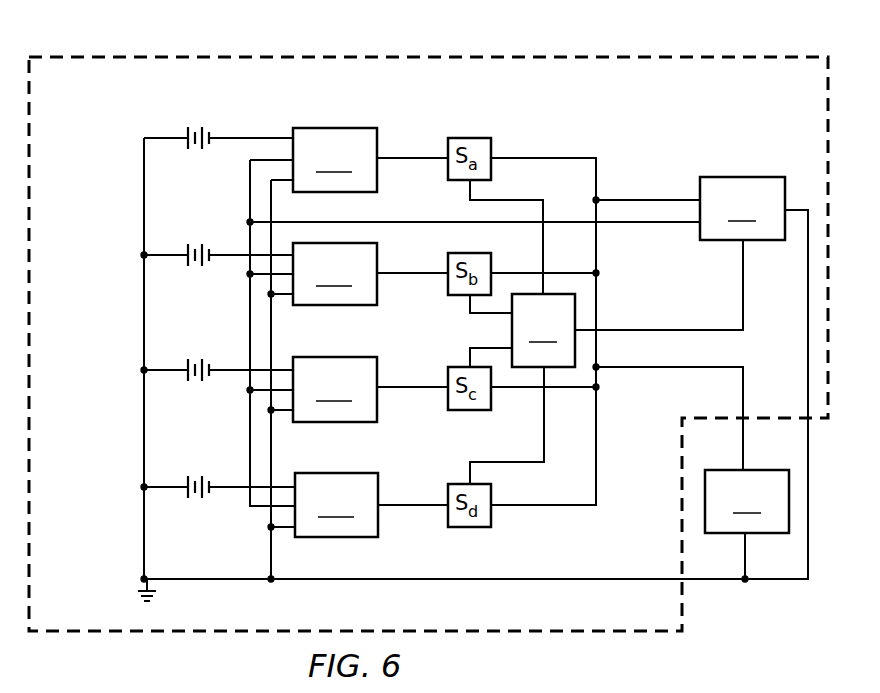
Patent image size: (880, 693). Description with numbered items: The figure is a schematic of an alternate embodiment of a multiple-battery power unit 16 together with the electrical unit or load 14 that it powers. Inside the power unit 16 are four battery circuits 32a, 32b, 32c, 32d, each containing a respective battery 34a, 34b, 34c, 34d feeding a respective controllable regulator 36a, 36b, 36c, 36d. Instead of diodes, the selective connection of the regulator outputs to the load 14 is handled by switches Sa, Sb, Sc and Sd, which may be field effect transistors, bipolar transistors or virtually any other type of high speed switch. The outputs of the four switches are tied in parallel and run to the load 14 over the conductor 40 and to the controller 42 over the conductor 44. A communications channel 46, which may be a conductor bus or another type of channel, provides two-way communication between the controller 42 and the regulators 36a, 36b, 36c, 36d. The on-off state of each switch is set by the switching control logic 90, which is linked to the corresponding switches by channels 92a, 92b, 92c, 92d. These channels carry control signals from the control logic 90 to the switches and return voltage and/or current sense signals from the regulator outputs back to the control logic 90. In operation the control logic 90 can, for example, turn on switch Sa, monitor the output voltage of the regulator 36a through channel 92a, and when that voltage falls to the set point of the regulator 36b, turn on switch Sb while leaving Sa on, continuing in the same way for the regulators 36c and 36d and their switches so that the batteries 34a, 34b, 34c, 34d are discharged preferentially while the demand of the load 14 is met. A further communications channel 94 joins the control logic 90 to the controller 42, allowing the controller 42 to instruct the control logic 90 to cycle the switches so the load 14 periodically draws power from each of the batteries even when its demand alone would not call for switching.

The electrical unit or load 14 is at (747, 526).
The power unit 16 is at (684, 599).
The first battery circuit 32a is at (167, 126).
The second battery circuit 32b is at (167, 241).
The third battery circuit 32c is at (168, 402).
The fourth battery circuit 32d is at (170, 518).
The first battery 34a is at (200, 125).
The second battery 34b is at (200, 241).
The third battery 34c is at (201, 385).
The fourth battery 34d is at (203, 502).
The first regulator 36a is at (370, 160).
The second regulator 36b is at (370, 274).
The third regulator 36c is at (370, 389).
The fourth regulator 36d is at (371, 505).
The conductor 40 is at (628, 368).
The controller 42 is at (742, 208).
The conductor 44 is at (638, 198).
The communications channel 46 is at (640, 224).
The switching control logic 90 is at (543, 330).
The first channel 92a is at (467, 190).
The second channel 92b is at (467, 303).
The third channel 92c is at (467, 357).
The fourth channel 92d is at (467, 473).
The communications channel 94 is at (692, 329).